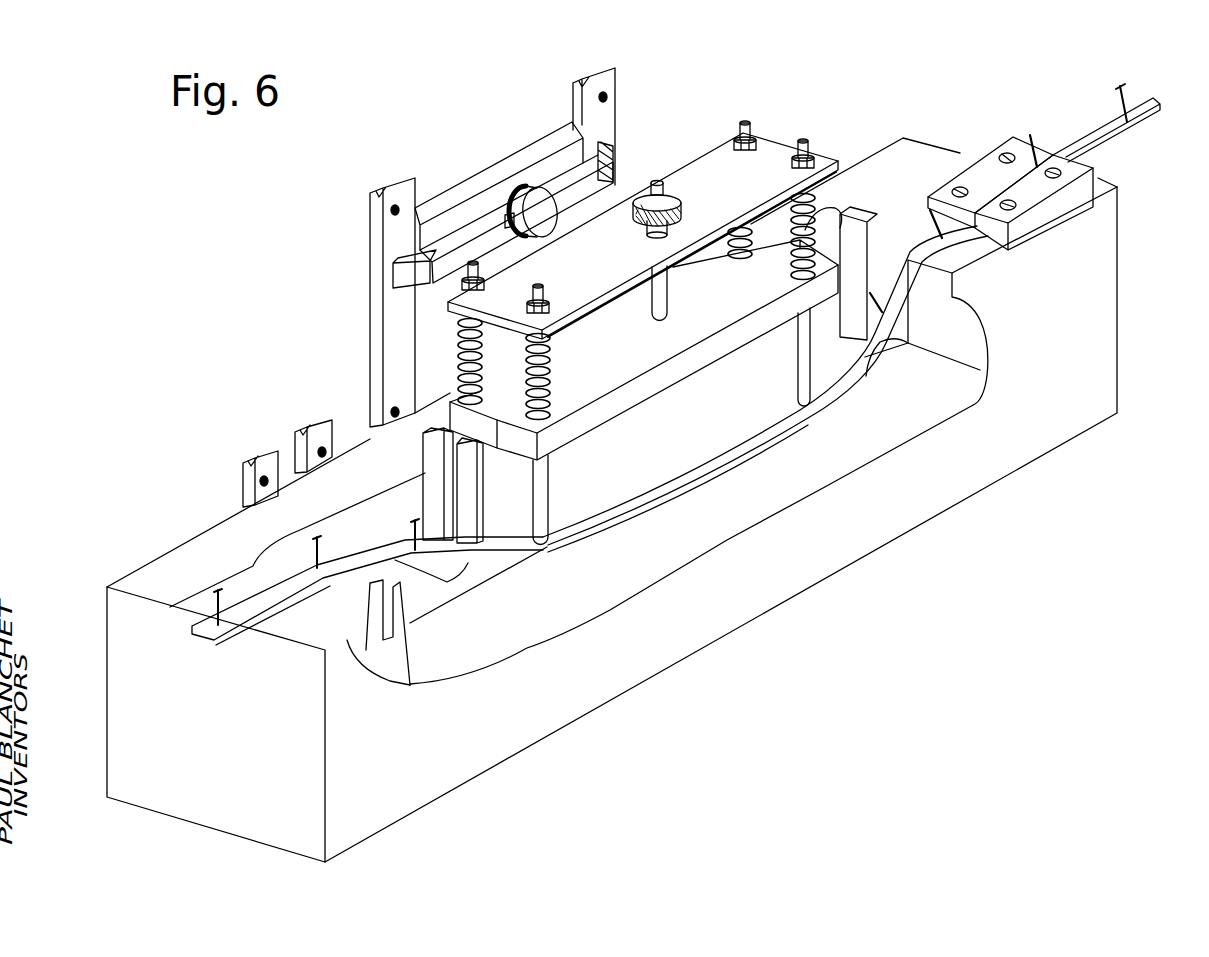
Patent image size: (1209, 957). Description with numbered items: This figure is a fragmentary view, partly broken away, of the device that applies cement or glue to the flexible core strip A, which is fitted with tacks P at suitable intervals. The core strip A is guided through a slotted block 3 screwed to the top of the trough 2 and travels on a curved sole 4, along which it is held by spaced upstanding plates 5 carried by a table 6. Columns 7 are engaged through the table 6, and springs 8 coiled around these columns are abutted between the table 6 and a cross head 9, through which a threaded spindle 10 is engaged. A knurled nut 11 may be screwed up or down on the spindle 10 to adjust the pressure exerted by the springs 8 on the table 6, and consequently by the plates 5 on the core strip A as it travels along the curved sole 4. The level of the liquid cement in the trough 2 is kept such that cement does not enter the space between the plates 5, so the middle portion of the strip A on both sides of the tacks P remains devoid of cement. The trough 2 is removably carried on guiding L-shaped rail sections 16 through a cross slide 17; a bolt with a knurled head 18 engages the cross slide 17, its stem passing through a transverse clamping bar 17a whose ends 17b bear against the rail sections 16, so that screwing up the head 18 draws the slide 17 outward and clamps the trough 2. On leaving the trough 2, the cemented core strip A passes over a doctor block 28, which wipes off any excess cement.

The trough 2 is at (1097, 340).
The slotted block 3 is at (983, 177).
The curved sole 4 is at (853, 370).
The upstanding plates 5 is at (437, 480).
The table 6 is at (640, 343).
The columns 7 is at (548, 548).
The springs 8 is at (460, 362).
The cross head 9 is at (767, 163).
The threaded spindle 10 is at (667, 313).
The knurled nut 11 is at (680, 187).
The L-shaped rail sections 16 is at (405, 193).
The cross slide 17 is at (493, 177).
The transverse clamping bar 17a is at (465, 233).
The ends of the clamping bar 17b is at (652, 98).
The knurled bolt head 18 is at (538, 203).
The doctor block 28 is at (398, 663).
The core strip A is at (1100, 137).
The tacks P is at (1126, 86).